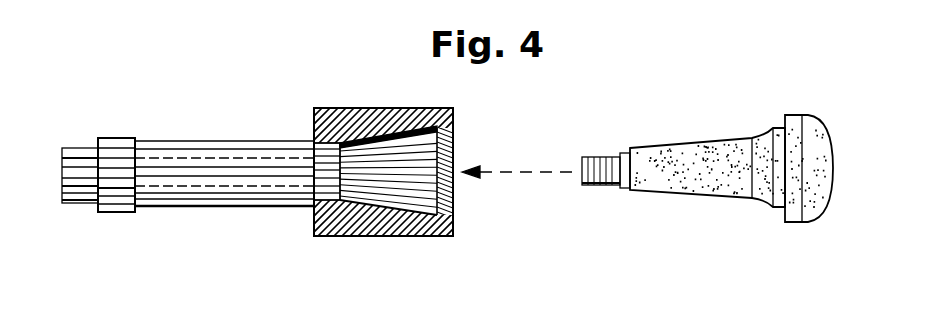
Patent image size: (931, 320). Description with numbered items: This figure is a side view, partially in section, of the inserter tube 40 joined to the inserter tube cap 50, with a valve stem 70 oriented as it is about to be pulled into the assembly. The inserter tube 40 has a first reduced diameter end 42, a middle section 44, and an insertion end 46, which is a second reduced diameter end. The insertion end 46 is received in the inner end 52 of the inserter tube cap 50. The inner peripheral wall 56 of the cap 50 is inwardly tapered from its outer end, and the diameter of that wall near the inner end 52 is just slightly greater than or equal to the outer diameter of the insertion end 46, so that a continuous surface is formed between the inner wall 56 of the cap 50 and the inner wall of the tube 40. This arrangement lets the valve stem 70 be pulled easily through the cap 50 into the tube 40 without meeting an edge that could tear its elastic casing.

The inserter tube 40 is at (207, 130).
The first reduced diameter end 42 is at (80, 197).
The middle section 44 is at (188, 197).
The insertion end 46 is at (345, 233).
The inserter tube cap 50 is at (367, 105).
The inner end 52 is at (313, 125).
The inner peripheral wall 56 is at (415, 230).
The valve stem 70 is at (742, 150).